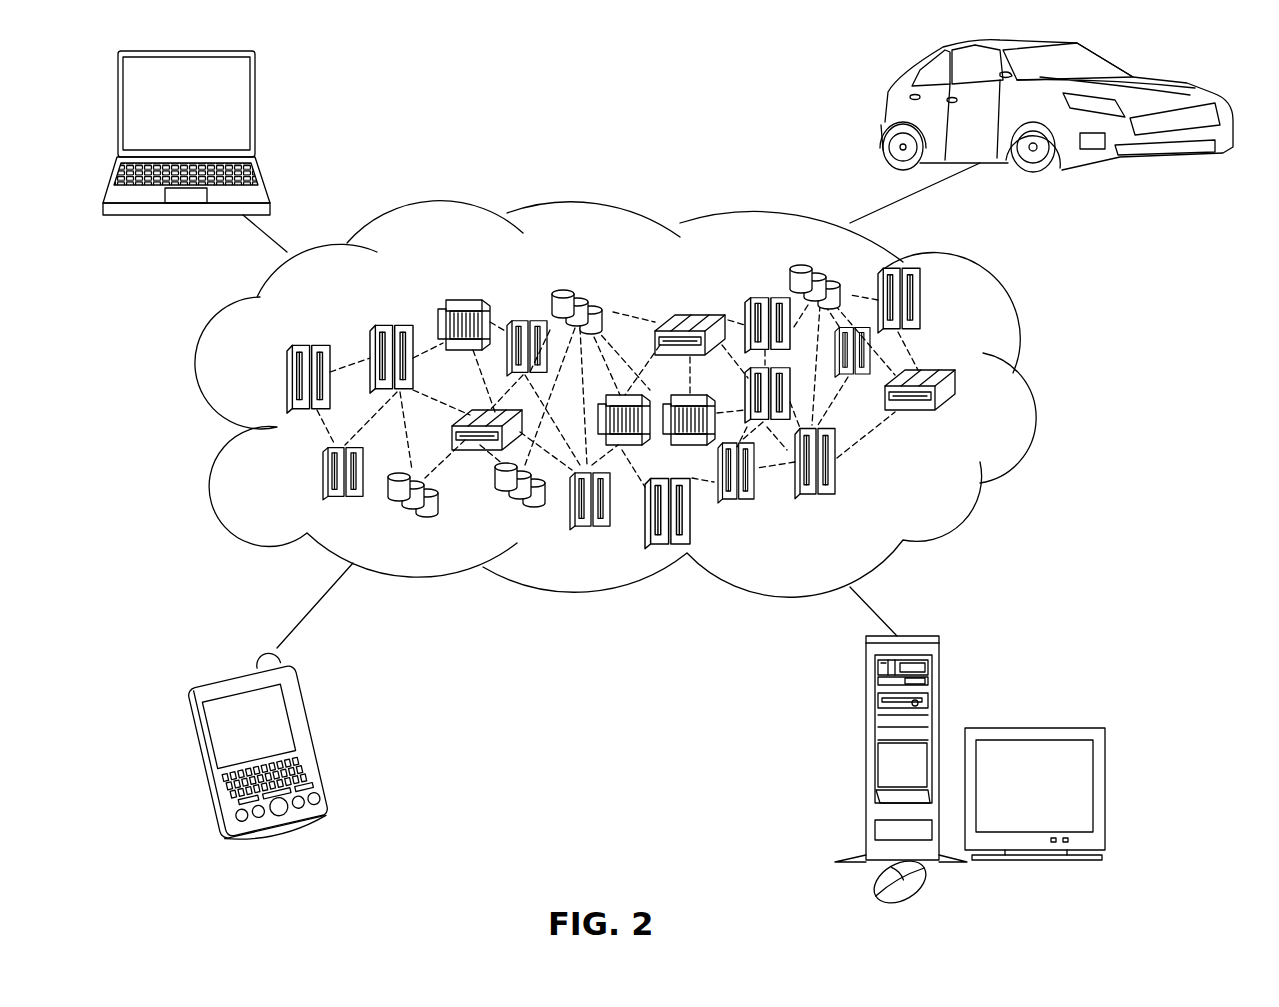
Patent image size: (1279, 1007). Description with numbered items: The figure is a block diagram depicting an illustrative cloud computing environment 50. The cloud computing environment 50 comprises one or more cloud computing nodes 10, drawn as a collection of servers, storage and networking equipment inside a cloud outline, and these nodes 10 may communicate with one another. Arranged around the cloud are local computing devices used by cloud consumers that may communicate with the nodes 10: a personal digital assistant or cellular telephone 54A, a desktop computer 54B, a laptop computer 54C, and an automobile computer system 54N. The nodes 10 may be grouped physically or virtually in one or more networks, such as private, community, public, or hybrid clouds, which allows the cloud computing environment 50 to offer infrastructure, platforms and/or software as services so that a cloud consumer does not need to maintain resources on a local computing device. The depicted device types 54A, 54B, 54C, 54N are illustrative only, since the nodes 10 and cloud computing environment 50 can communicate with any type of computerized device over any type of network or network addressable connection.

The cloud computing nodes 10 is at (950, 494).
The cloud computing environment 50 is at (1040, 386).
The personal digital assistant (PDA) or cellular telephone 54A is at (308, 710).
The desktop computer 54B is at (866, 695).
The laptop computer 54C is at (255, 88).
The automobile computer system 54N is at (883, 105).